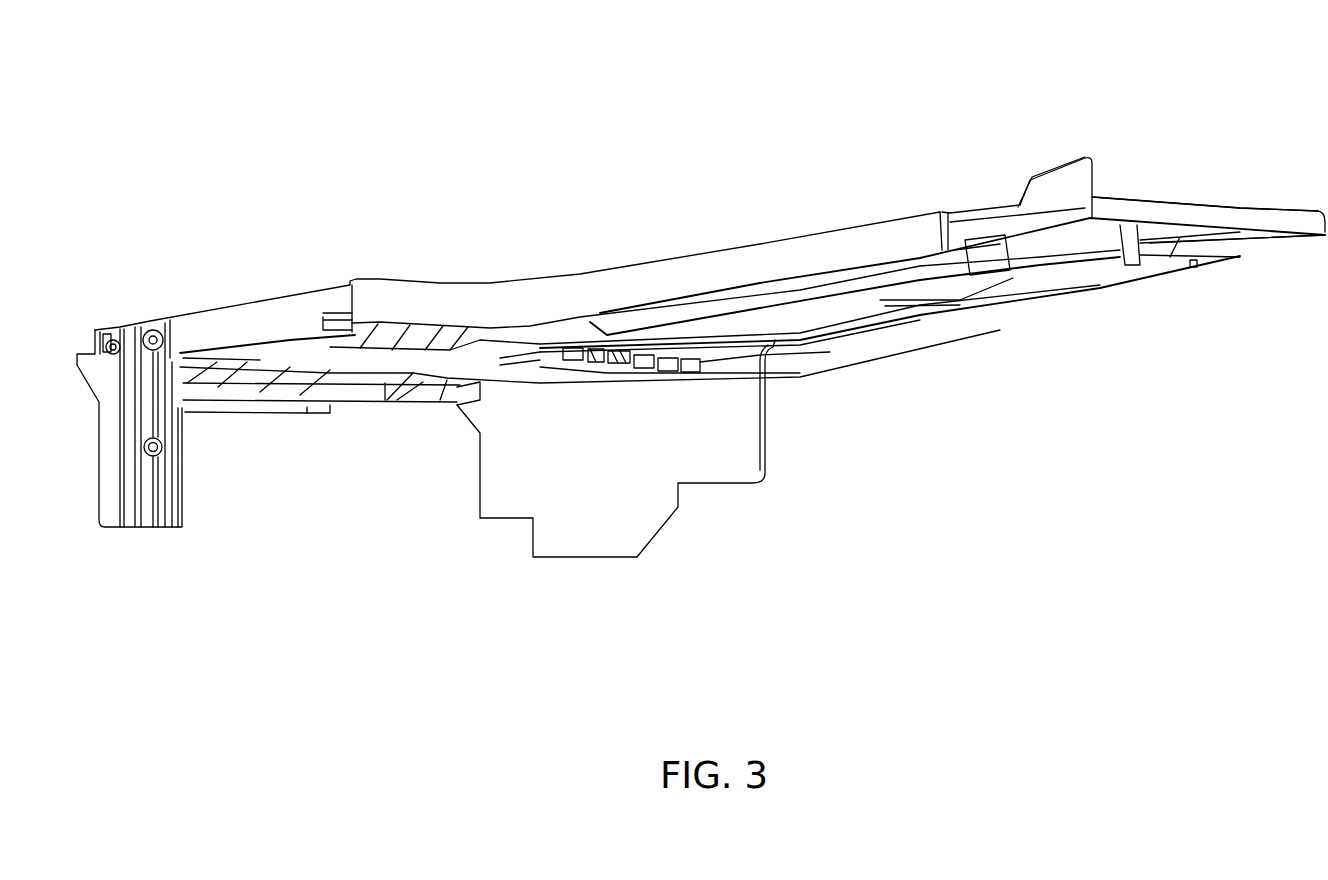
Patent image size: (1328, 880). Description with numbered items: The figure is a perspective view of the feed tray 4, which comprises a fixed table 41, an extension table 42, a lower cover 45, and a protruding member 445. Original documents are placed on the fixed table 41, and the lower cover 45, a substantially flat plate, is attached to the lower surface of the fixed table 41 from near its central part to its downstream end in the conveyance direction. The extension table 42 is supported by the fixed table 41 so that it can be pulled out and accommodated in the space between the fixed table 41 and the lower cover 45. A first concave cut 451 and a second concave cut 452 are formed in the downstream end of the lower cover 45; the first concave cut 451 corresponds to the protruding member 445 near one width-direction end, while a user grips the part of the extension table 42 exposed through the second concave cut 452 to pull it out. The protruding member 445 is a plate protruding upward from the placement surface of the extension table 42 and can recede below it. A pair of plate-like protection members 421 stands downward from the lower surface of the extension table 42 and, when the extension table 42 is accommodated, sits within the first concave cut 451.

The feed tray 4 is at (1238, 108).
The fixed table 41 is at (628, 283).
The extension table 42 is at (1238, 218).
The protection members 421 is at (1130, 260).
The protruding member 445 is at (1057, 180).
The lower cover 45 is at (802, 313).
The first concave cut 451 is at (933, 287).
The second concave cut 452 is at (1127, 260).